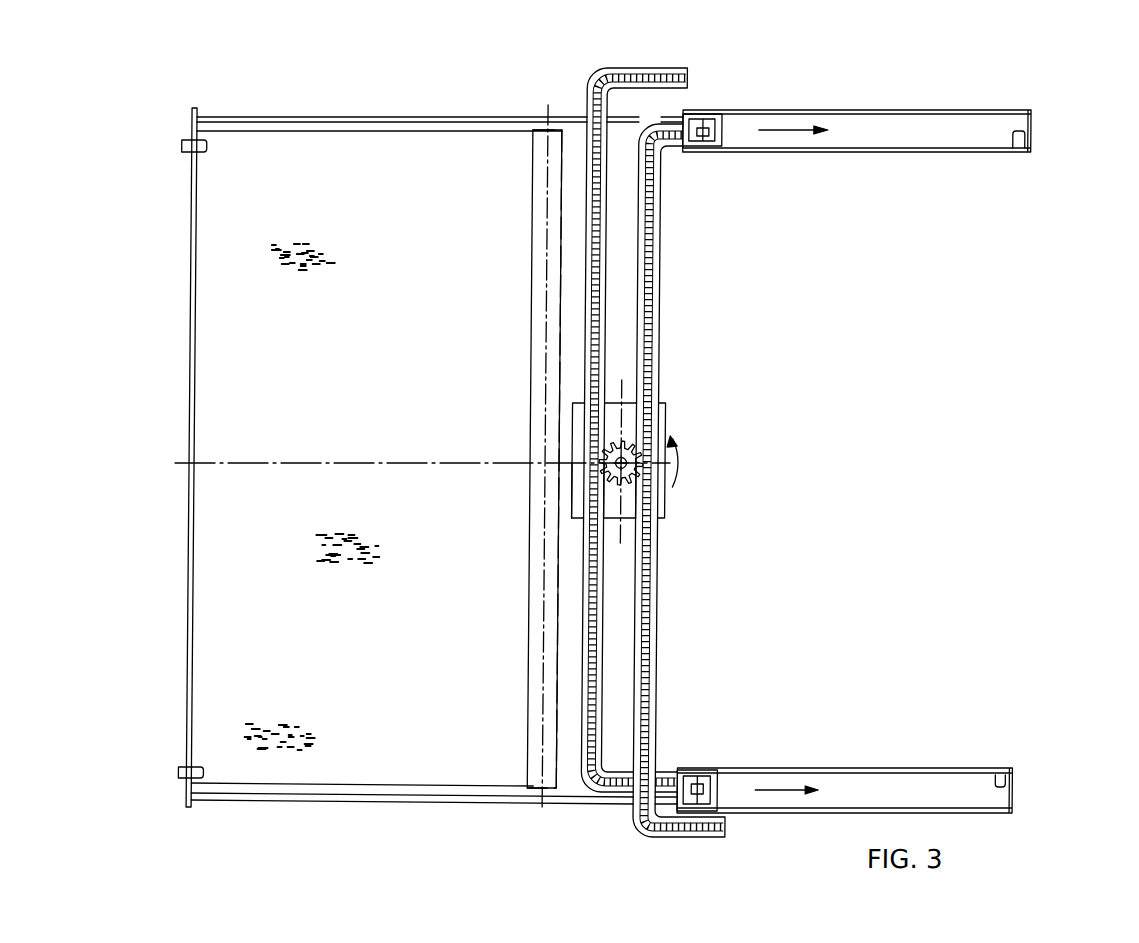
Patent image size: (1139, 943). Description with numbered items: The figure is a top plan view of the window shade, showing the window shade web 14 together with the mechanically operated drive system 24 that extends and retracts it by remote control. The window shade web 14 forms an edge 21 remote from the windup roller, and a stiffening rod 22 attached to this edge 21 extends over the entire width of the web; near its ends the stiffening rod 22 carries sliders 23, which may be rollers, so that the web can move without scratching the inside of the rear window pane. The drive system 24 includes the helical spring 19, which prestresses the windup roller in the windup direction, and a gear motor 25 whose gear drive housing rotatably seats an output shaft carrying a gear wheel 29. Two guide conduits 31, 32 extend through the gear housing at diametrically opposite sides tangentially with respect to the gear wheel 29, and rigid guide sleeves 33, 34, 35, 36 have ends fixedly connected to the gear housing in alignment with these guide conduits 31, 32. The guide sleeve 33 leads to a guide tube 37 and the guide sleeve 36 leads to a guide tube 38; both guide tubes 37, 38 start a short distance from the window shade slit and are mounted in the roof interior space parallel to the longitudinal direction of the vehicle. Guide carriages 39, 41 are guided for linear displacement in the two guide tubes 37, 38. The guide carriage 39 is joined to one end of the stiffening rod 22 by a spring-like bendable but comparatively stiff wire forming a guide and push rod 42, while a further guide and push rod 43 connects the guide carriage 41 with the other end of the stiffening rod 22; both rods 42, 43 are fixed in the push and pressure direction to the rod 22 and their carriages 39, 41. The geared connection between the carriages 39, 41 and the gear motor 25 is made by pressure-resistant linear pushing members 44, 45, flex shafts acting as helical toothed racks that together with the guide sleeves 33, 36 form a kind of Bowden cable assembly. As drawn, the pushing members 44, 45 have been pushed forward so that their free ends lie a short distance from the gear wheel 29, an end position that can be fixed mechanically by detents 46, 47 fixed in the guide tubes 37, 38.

The window shade web 14 is at (413, 413).
The helical spring 19 is at (540, 600).
The edge 21 is at (199, 590).
The stiffening rod 22 is at (193, 575).
The sliders 23 is at (183, 146).
The drive system 24 is at (783, 337).
The gear motor 25 is at (672, 418).
The gear wheel 29 is at (652, 496).
The guide conduit 31 is at (648, 440).
The guide conduit 32 is at (602, 508).
The guide sleeve 33 is at (662, 330).
The guide sleeve 34 is at (588, 310).
The guide sleeve 35 is at (668, 622).
The guide sleeve 36 is at (596, 668).
The guide tube 37 is at (858, 110).
The guide tube 38 is at (882, 768).
The guide carriage 39 is at (723, 125).
The guide carriage 41 is at (712, 785).
The guide and push rod 42 is at (426, 118).
The guide and push rod 43 is at (446, 805).
The pushing member 44 is at (662, 272).
The pushing member 45 is at (590, 250).
The detent 46 is at (1021, 150).
The detent 47 is at (1010, 776).